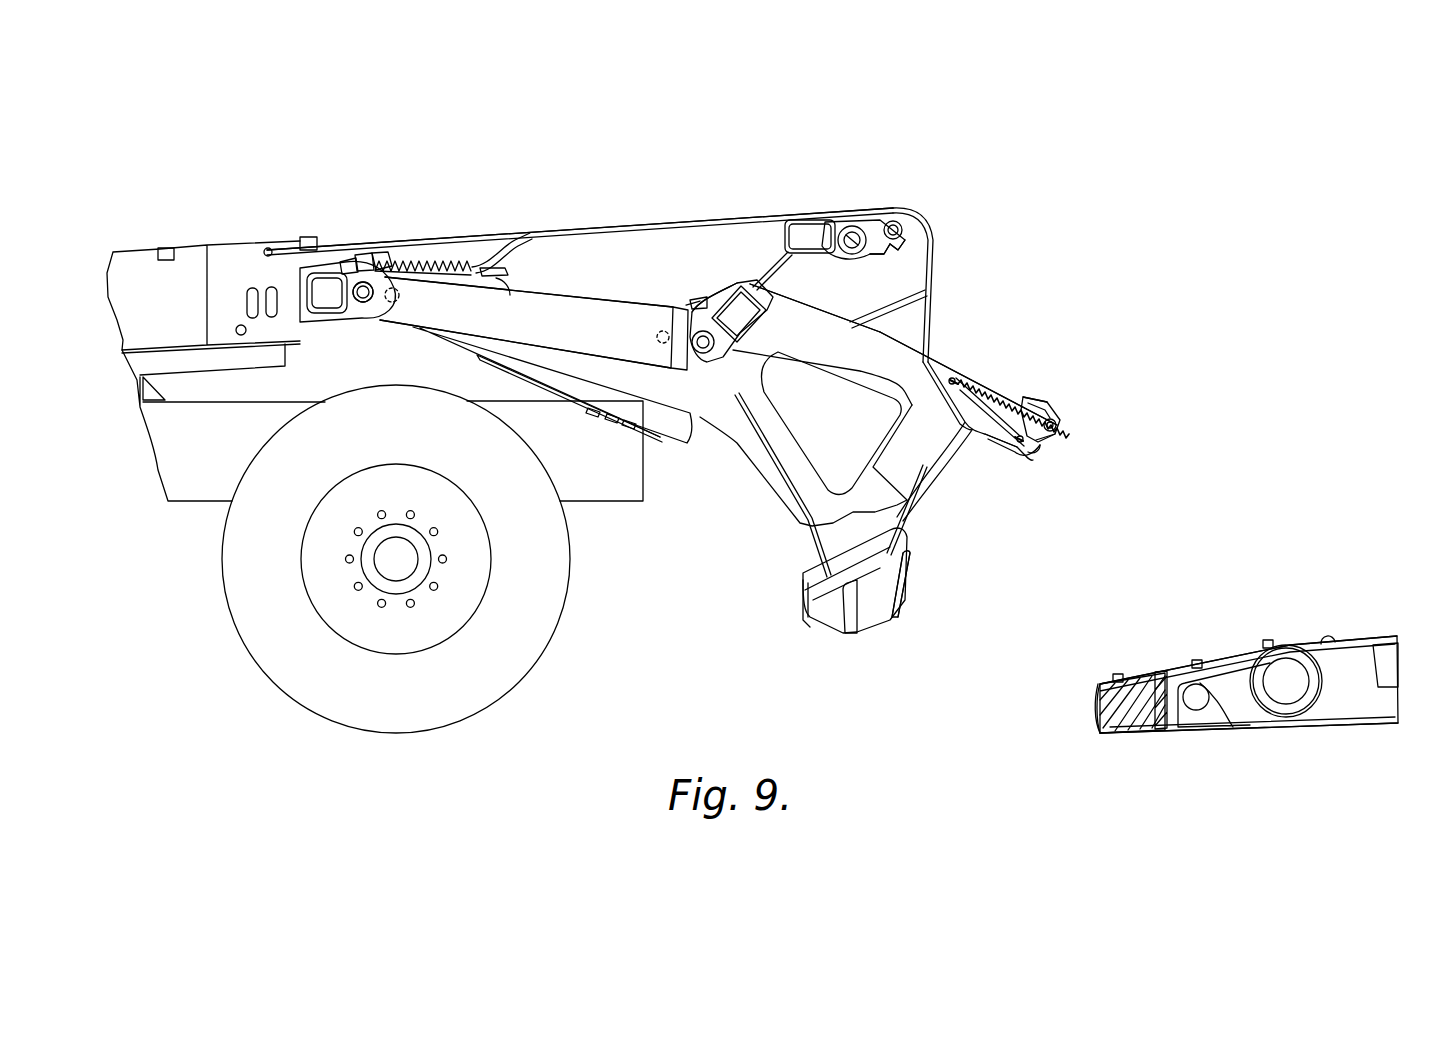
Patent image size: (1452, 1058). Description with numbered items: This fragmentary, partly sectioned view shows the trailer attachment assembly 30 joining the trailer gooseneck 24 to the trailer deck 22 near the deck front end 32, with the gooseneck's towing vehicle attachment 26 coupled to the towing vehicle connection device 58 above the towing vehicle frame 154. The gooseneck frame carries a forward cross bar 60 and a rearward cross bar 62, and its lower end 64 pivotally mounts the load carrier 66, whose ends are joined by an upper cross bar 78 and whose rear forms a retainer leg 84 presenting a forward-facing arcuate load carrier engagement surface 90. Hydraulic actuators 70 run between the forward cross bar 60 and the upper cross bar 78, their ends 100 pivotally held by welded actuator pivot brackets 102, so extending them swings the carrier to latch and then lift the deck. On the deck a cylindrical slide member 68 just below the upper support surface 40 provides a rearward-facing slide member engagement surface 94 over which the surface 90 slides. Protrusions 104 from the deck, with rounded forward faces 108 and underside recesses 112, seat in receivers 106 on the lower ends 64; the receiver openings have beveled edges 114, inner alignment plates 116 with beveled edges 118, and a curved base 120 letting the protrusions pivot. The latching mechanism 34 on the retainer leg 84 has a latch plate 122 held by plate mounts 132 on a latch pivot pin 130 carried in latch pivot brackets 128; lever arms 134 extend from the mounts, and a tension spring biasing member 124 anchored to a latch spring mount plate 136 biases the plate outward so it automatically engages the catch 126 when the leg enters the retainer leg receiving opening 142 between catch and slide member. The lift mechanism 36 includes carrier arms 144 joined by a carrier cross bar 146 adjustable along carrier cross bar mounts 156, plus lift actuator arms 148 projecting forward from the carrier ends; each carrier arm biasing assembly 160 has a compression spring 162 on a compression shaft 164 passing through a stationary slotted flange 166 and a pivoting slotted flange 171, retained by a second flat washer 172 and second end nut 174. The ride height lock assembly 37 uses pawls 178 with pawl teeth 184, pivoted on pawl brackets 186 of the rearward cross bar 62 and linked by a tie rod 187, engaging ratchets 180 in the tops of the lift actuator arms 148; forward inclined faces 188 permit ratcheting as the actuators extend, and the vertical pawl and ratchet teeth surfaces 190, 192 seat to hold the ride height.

The trailer deck 22 is at (1404, 640).
The trailer gooseneck 24 is at (410, 187).
The towing vehicle attachment 26 is at (165, 232).
The trailer attachment assembly 30 is at (1073, 297).
The front end 32 is at (1098, 728).
The latching mechanism 34 is at (1068, 392).
The lift mechanism 36 is at (710, 487).
The ride height lock assembly 37 is at (905, 208).
The upper support surface 40 is at (1331, 648).
The towing vehicle connection device 58 is at (160, 362).
The forward cross bar 60 is at (312, 290).
The rearward cross bar 62 is at (795, 233).
The lower end 64 is at (782, 583).
The load carrier 66 is at (878, 345).
The slide member 68 is at (1270, 712).
The actuators 70 is at (450, 317).
The upper cross bar 78 is at (745, 300).
The retainer leg 84 is at (1018, 391).
The load carrier engagement surface 90 is at (1024, 458).
The slide member engagement surface 94 is at (1298, 650).
The actuator ends 100 is at (378, 312).
The actuator pivot brackets 102 is at (347, 305).
The protrusions 104 is at (1108, 685).
The receivers 106 is at (825, 610).
The forward faces 108 is at (1097, 695).
The recess 112 is at (1157, 676).
The beveled edges 114 is at (908, 563).
The alignment plates 116 is at (908, 583).
The beveled edges 118 is at (905, 596).
The base 120 is at (855, 600).
The latch plate 122 is at (1036, 404).
The latch plate biasing member 124 is at (985, 392).
The catch 126 is at (1378, 660).
The latch pivot brackets 128 is at (1030, 456).
The latch pivot pin 130 is at (1056, 426).
The plate mounts 132 is at (1043, 437).
The lever arms 134 is at (1040, 447).
The latch spring mount plate 136 is at (945, 401).
The retainer leg receiving opening 142 is at (1350, 640).
The carrier arms 144 is at (560, 380).
The carrier cross bar 146 is at (647, 475).
The lift actuator arms 148 is at (627, 362).
The towing vehicle frame 154 is at (200, 488).
The carrier cross bar mounts 156 is at (525, 381).
The carrier arm biasing assembly 160 is at (464, 270).
The compression spring 162 is at (495, 265).
The compression shaft 164 is at (356, 255).
The stationary slotted flange 166 is at (350, 256).
The pivoting slotted flange 171 is at (372, 258).
The second flat washer 172 is at (505, 268).
The second end nut 174 is at (500, 280).
The pawls 178 is at (876, 232).
The ratchets 180 is at (690, 283).
The pawl teeth 184 is at (905, 243).
The pawl brackets 186 is at (840, 222).
The tie rod 187 is at (897, 232).
The forward inclined faces 188 is at (703, 296).
The vertical pawl teeth surfaces 190 is at (890, 258).
The vertical ratchet teeth surfaces 192 is at (695, 302).